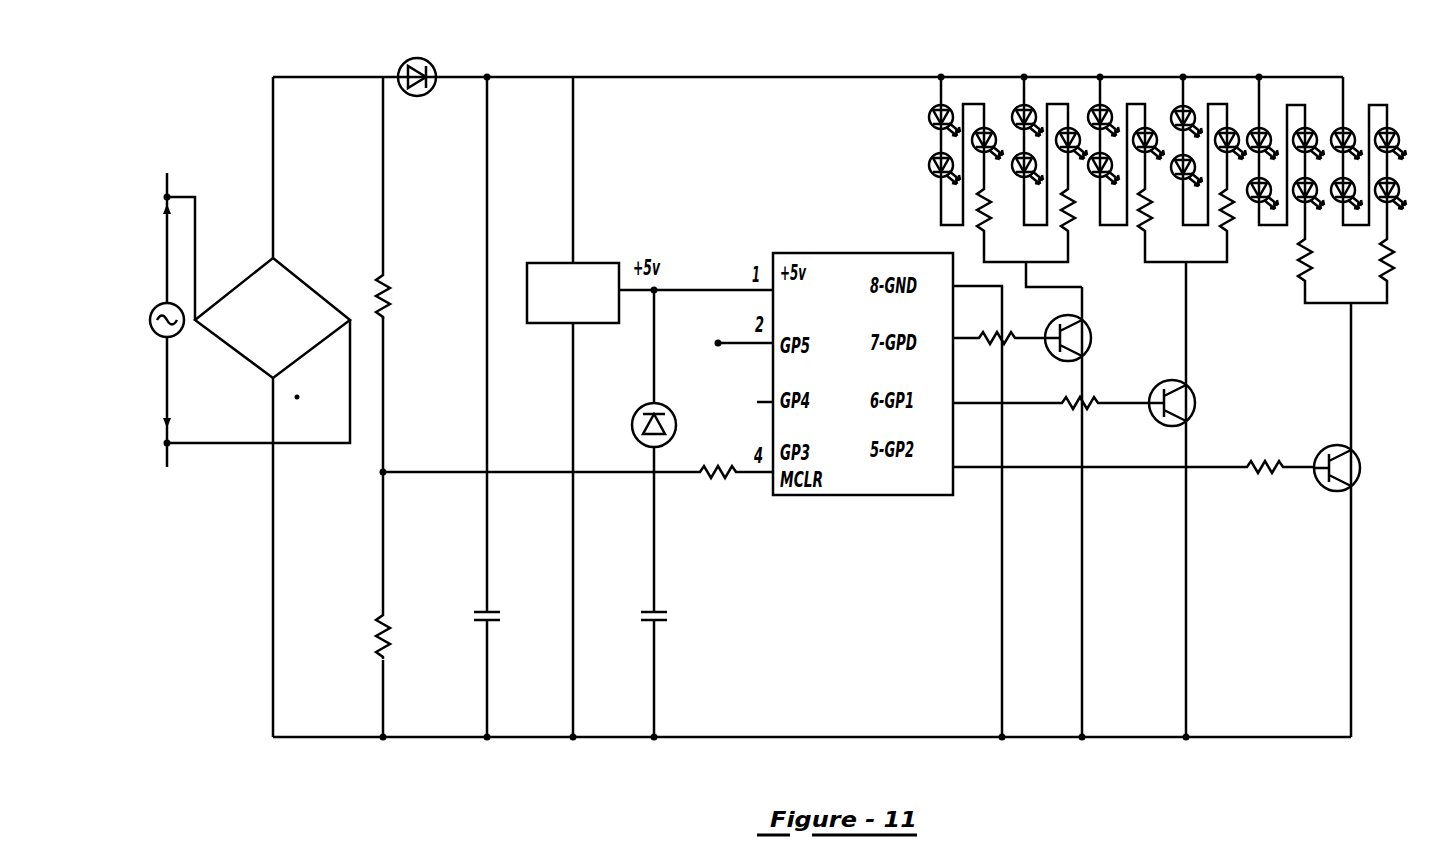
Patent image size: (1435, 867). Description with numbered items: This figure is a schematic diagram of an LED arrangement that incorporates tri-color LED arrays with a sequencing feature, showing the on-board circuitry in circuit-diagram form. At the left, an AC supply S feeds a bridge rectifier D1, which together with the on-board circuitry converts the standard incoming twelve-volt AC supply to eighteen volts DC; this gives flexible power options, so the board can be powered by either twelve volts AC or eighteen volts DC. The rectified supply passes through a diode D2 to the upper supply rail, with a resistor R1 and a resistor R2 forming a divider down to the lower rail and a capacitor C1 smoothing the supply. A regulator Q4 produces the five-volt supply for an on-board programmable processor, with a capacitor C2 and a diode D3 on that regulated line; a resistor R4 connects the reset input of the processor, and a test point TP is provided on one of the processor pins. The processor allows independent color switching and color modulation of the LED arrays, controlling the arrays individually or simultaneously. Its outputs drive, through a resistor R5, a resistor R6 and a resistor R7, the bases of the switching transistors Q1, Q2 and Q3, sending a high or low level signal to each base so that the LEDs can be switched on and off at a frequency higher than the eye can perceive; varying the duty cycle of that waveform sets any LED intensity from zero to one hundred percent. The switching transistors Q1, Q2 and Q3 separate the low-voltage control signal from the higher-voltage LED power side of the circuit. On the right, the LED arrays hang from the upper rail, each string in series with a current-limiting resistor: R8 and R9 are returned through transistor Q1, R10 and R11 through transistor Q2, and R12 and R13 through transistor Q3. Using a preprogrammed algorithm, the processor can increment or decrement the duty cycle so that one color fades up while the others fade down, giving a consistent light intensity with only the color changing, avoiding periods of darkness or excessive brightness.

The AC power source S is at (154, 320).
The bridge rectifier D1 is at (272, 309).
The diode D2 is at (409, 67).
The diode D3 is at (636, 425).
The 7DLO5 voltage regulator Q4 is at (566, 275).
The test point TP is at (740, 329).
The resistor R1 is at (402, 296).
The resistor R2 is at (401, 636).
The capacitor C1 is at (501, 617).
The capacitor C2 is at (669, 617).
The resistor R4 is at (718, 489).
The resistor R5 is at (992, 353).
The resistor R6 is at (1073, 419).
The resistor R7 is at (1265, 484).
The switching transistor Q1 is at (1083, 338).
The switching transistor Q2 is at (1171, 420).
The switching transistor Q3 is at (1349, 478).
The LED string resistor R8 is at (995, 222).
The LED string resistor R9 is at (1079, 222).
The LED string resistor R10 is at (1159, 222).
The LED string resistor R11 is at (1242, 222).
The LED string resistor R12 is at (1321, 270).
The LED string resistor R13 is at (1384, 287).